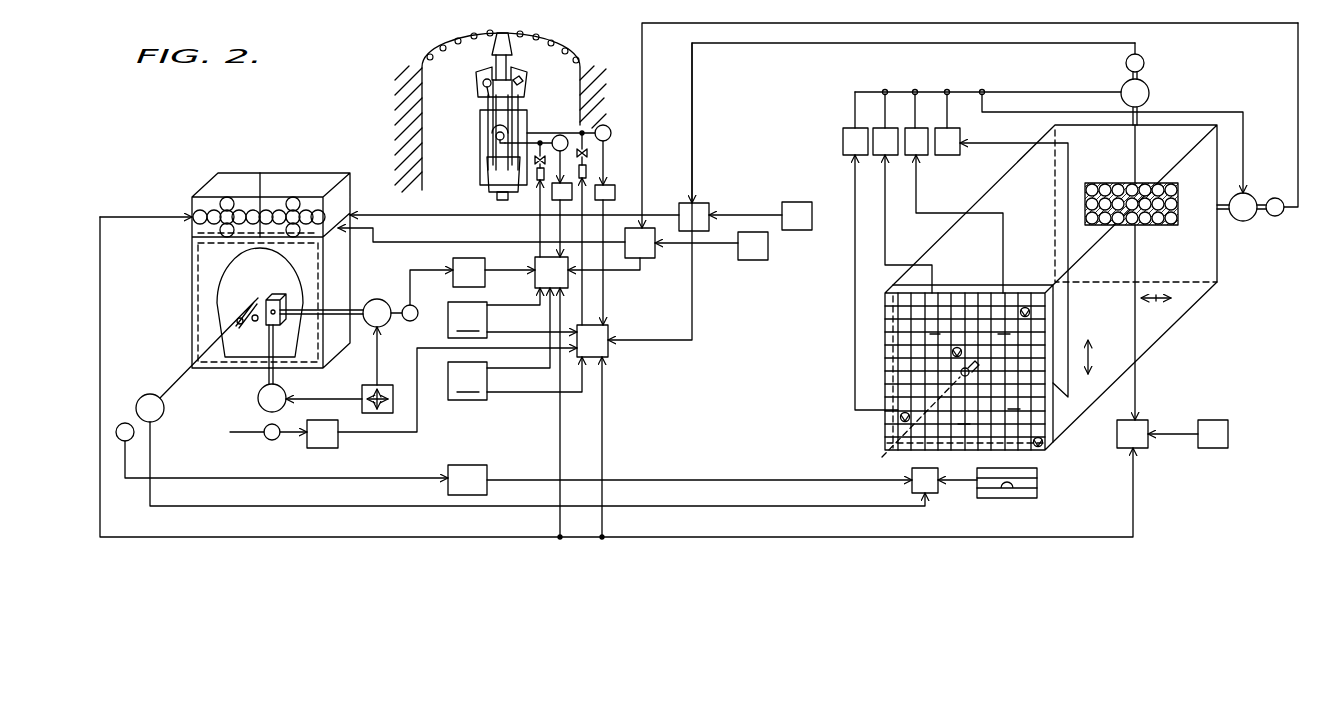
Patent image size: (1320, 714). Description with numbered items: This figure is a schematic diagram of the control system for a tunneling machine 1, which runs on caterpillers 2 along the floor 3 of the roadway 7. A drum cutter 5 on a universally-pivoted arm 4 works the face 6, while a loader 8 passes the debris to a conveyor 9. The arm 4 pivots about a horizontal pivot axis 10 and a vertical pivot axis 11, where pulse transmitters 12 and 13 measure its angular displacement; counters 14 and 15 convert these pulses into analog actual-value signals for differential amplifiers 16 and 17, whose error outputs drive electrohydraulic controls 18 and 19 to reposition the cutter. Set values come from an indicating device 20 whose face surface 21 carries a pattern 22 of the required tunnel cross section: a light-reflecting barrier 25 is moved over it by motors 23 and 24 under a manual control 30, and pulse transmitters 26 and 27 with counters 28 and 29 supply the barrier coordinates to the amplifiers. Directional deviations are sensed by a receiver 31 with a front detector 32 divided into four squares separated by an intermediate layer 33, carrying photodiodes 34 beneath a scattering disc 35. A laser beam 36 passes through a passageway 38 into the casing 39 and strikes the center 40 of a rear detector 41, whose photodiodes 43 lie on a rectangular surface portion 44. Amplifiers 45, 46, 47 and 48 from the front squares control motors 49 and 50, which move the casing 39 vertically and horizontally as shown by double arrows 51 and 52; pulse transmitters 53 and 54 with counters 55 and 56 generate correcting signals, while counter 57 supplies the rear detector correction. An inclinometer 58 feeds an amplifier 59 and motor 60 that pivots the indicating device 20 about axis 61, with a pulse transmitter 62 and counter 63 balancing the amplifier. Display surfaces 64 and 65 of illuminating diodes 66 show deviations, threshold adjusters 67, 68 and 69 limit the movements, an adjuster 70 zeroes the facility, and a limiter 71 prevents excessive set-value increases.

The tunneling machine 1 is at (492, 186).
The caterpillers 2 is at (483, 132).
The floor 3 is at (556, 76).
The universally-pivoted arm 4 is at (495, 62).
The drum cutter 5 is at (505, 44).
The face 6 is at (463, 45).
The roadway 7 is at (452, 193).
The loader 8 is at (477, 89).
The conveyor 9 is at (509, 197).
The horizontal pivot axis 10 is at (480, 133).
The vertical pivot axis 11 is at (497, 140).
The pulse transmitter 12 is at (538, 180).
The pulse transmitter 13 is at (609, 127).
The counter 14 is at (553, 205).
The counter 15 is at (616, 193).
The differential amplifier 16 is at (536, 280).
The differential amplifier 17 is at (610, 357).
The electrohydraulic control 18 is at (548, 171).
The electrohydraulic control 19 is at (590, 171).
The indicating device 20 is at (312, 263).
The face surface 21 is at (325, 268).
The pattern 22 is at (222, 270).
The motor 23 is at (383, 300).
The motor 24 is at (258, 400).
The light-reflecting barrier 25 is at (272, 300).
The pulse transmitter 26 is at (412, 306).
The pulse transmitter 27 is at (253, 433).
The counter 28 is at (453, 263).
The counter 29 is at (308, 446).
The manual control 30 is at (363, 388).
The receiver 31 is at (1195, 320).
The front detector 32 is at (1046, 452).
The intermediate layer 33 is at (968, 292).
The photodiodes 34 is at (945, 353).
The disc 35 is at (1053, 335).
The laser beam 36 is at (874, 458).
The passageway 38 is at (960, 373).
The casing 39 is at (1162, 345).
The center 40 is at (1138, 188).
The rear detector 41 is at (1055, 222).
The photodiodes 43 is at (1108, 188).
The rectangular surface portion 44 is at (1152, 226).
The amplifier 45 is at (843, 143).
The amplifier 46 is at (890, 112).
The amplifier 47 is at (923, 158).
The amplifier 48 is at (962, 152).
The motor 49 is at (1150, 93).
The motor 50 is at (1243, 221).
The double arrow 51 is at (1104, 357).
The double arrow 52 is at (1155, 309).
The pulse transmitter 53 is at (1145, 63).
The pulse transmitter 54 is at (1277, 216).
The counter 55 is at (714, 205).
The counter 56 is at (652, 260).
The counter 57 is at (1148, 450).
The inclinometer 58 is at (1007, 499).
The amplifier 59 is at (938, 494).
The motor 60 is at (152, 394).
The axis 61 is at (248, 316).
The pulse transmitter 62 is at (125, 423).
The counter 63 is at (488, 467).
The display surface 64 is at (313, 197).
The display surface 65 is at (227, 196).
The illuminating diodes 66 is at (261, 198).
The threshold adjuster 67 is at (797, 202).
The threshold adjuster 68 is at (755, 260).
The threshold adjuster 69 is at (1229, 437).
The adjuster 70 is at (512, 313).
The limiter 71 is at (515, 344).